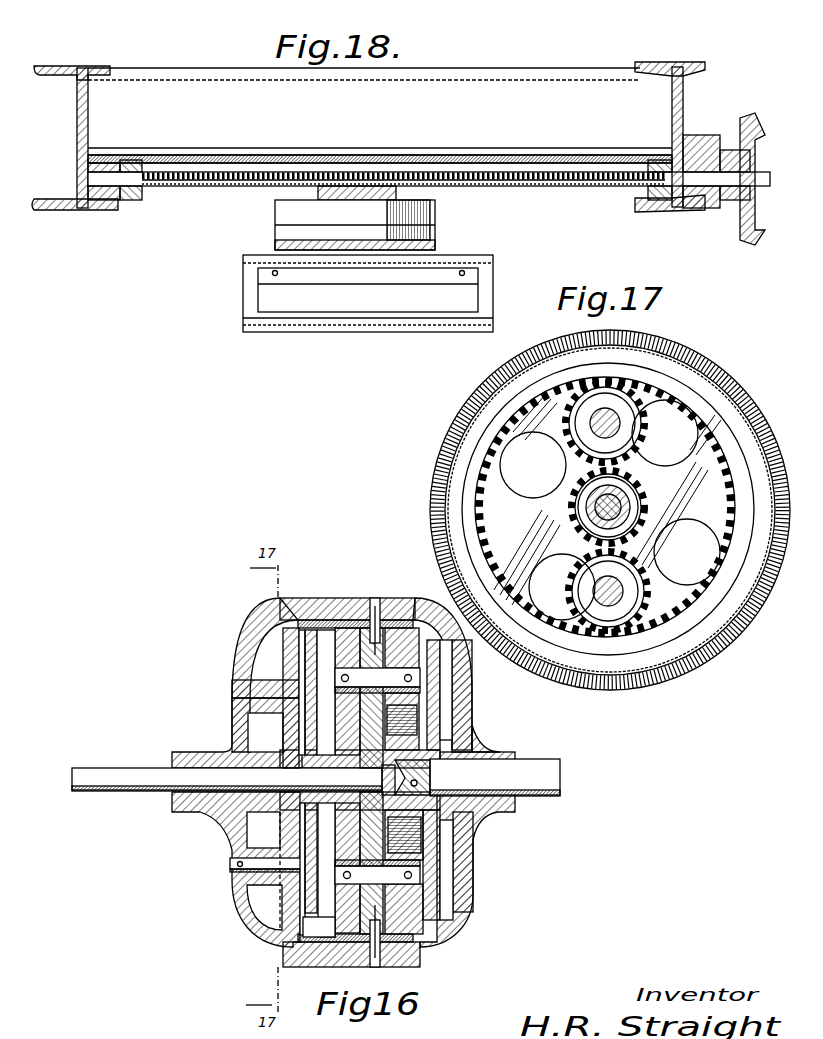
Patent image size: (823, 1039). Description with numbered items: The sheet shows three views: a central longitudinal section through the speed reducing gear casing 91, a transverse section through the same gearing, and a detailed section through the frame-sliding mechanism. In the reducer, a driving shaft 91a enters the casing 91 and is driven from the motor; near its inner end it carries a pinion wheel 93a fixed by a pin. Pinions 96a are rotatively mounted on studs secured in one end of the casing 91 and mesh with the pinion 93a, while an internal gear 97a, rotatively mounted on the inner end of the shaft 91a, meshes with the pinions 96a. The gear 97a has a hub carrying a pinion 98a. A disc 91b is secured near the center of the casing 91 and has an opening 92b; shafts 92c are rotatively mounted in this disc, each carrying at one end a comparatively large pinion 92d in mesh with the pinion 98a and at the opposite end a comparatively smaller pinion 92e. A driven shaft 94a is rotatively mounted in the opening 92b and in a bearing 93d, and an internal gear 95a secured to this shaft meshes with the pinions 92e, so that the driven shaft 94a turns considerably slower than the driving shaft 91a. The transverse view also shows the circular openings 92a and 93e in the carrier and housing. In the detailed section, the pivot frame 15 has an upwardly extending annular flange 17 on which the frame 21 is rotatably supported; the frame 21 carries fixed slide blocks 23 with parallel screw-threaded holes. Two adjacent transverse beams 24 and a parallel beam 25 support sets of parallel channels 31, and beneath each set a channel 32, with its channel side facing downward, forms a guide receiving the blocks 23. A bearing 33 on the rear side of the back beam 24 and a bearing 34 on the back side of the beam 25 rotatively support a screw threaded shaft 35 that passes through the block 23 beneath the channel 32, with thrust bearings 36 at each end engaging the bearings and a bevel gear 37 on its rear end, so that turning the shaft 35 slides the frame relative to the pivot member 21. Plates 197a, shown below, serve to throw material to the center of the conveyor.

In FIG. 18, the pivot frame 15 is at (437, 246).
In FIG. 18, the annular flange 17 is at (437, 228).
In FIG. 18, the frame 21 is at (437, 212).
In FIG. 18, the slide blocks 23 is at (408, 160).
In FIG. 18, the transverse beams 24 is at (89, 117).
In FIG. 18, the beam 25 is at (672, 106).
In FIG. 18, the channels 31 is at (380, 111).
In FIG. 18, the channel 32 is at (478, 160).
In FIG. 18, the bearing 33 is at (102, 165).
In FIG. 18, the bearing 34 is at (688, 150).
In FIG. 18, the screw threaded shaft 35 is at (540, 182).
In FIG. 18, the thrust bearings 36 is at (142, 194).
In FIG. 18, the bevel gear 37 is at (750, 120).
In FIG. 18, the plates 197a is at (368, 293).
In FIG. 17, the speed reducing gear casing 91 is at (692, 670).
In FIG. 16, the speed reducing gear casing 91 is at (320, 598).
In FIG. 17, the driving shaft 91a is at (622, 500).
In FIG. 16, the driving shaft 91a is at (227, 779).
In FIG. 16, the disc 91b is at (422, 944).
In FIG. 17, the opening in carrier 92a is at (580, 436).
In FIG. 16, the opening 92b is at (430, 612).
In FIG. 17, the shafts 92c is at (608, 420).
In FIG. 16, the shafts 92c is at (478, 702).
In FIG. 17, the pinion 92d is at (632, 570).
In FIG. 16, the pinion 92d is at (374, 612).
In FIG. 16, the pinion 92e is at (462, 896).
In FIG. 17, the pinion wheel 93a is at (648, 506).
In FIG. 16, the bearing 93d is at (516, 810).
In FIG. 16, the opening 93e is at (296, 760).
In FIG. 16, the driven shaft 94a is at (400, 780).
In FIG. 16, the internal gear 95a is at (256, 690).
In FIG. 16, the pinions 96a is at (290, 658).
In FIG. 17, the internal gear 97a is at (608, 509).
In FIG. 16, the internal gear 97a is at (284, 620).
In FIG. 16, the pinion 98a is at (357, 780).